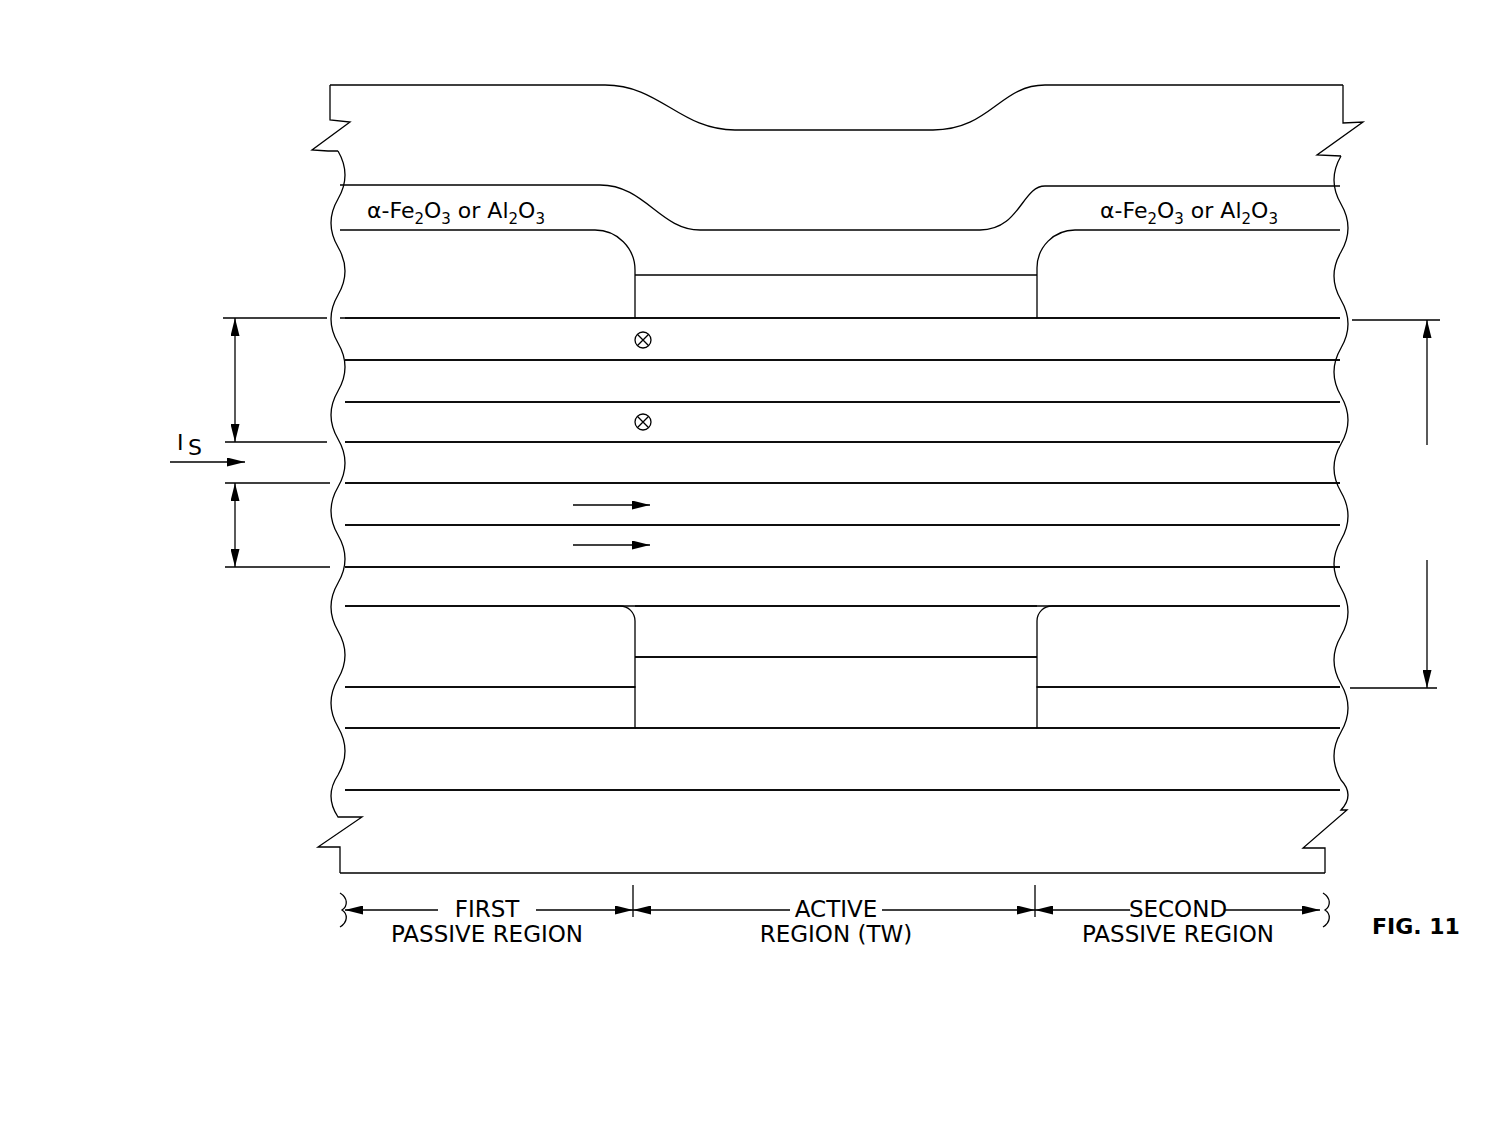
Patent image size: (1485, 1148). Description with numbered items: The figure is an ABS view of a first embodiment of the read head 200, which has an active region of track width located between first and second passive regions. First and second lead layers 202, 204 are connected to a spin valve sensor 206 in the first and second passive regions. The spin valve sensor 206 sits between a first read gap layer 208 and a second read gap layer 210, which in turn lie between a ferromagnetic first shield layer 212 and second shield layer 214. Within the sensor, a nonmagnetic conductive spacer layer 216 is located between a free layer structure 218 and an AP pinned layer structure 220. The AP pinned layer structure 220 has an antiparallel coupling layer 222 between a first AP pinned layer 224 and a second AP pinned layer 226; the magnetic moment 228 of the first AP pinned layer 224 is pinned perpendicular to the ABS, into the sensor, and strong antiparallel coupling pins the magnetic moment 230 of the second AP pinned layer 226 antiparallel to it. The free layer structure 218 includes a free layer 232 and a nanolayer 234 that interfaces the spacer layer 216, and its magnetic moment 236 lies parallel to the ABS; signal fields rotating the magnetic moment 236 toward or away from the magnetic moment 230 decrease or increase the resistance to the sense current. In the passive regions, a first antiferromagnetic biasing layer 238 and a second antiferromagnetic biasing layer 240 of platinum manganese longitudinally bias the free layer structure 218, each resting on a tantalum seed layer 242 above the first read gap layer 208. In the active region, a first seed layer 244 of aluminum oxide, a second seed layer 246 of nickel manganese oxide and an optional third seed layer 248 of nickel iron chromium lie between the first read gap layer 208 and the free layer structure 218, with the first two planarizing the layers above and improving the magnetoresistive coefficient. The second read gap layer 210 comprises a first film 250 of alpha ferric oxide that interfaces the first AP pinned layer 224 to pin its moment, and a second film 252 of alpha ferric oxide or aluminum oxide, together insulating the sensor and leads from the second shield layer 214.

The read head 200 is at (842, 112).
The first lead layer 202 is at (547, 292).
The second lead layer 204 is at (1262, 292).
The spin valve sensor 206 is at (1412, 504).
The first read gap layer 208 is at (1017, 772).
The second read gap layer 210 is at (776, 228).
The first shield layer 212 is at (1017, 842).
The second shield layer 214 is at (1017, 170).
The spacer layer 216 is at (1017, 475).
The free layer structure 218 is at (238, 525).
The AP pinned layer structure 220 is at (235, 372).
The antiparallel coupling layer 222 is at (1017, 394).
The first AP pinned layer 224 is at (1017, 352).
The second AP pinned layer 226 is at (1017, 434).
The magnetic moment of the first AP pinned layer 228 is at (634, 340).
The magnetic moment of the second AP pinned layer 230 is at (634, 422).
The free layer 232 is at (1017, 559).
The nanolayer 234 is at (1017, 517).
The magnetic moment of the free layer structure 236 is at (583, 545).
The first antiferromagnetic biasing layer 238 is at (595, 659).
The second antiferromagnetic biasing layer 240 is at (1292, 659).
The tantalum seed layer 242 is at (595, 720).
The first seed layer 244 is at (1017, 705).
The second seed layer 246 is at (1017, 649).
The third seed layer 248 is at (1017, 598).
The first film 250 is at (1017, 309).
The second film 252 is at (1017, 267).